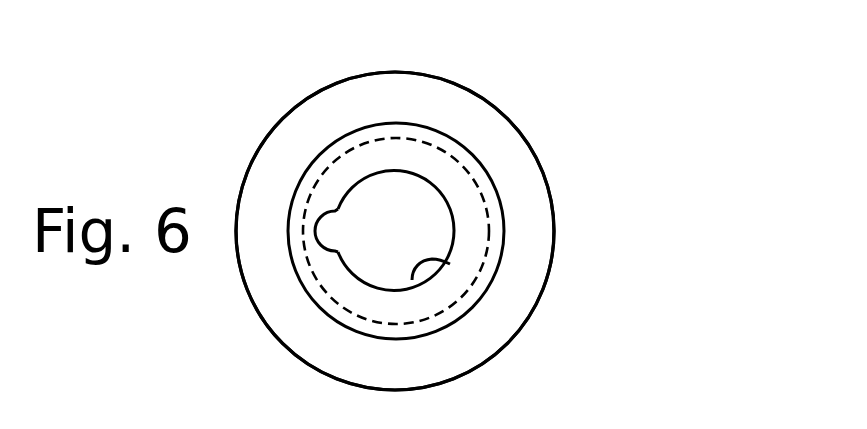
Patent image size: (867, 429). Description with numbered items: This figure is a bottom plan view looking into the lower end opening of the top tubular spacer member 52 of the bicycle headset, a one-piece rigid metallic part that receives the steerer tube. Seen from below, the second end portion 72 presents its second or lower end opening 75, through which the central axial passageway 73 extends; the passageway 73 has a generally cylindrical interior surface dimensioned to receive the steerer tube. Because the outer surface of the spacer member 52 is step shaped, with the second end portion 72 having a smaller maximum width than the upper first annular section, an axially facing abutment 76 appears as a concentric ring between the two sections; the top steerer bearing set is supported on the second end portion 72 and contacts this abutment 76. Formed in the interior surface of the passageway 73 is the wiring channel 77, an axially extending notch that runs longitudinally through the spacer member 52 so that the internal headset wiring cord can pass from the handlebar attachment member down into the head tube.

The top tubular spacer member 52 is at (550, 110).
The second end portion 72 is at (498, 228).
The central axial passageway 73 is at (418, 226).
The second or lower end opening 75 is at (449, 263).
The axially facing abutment 76 is at (460, 351).
The wiring channel 77 is at (319, 219).